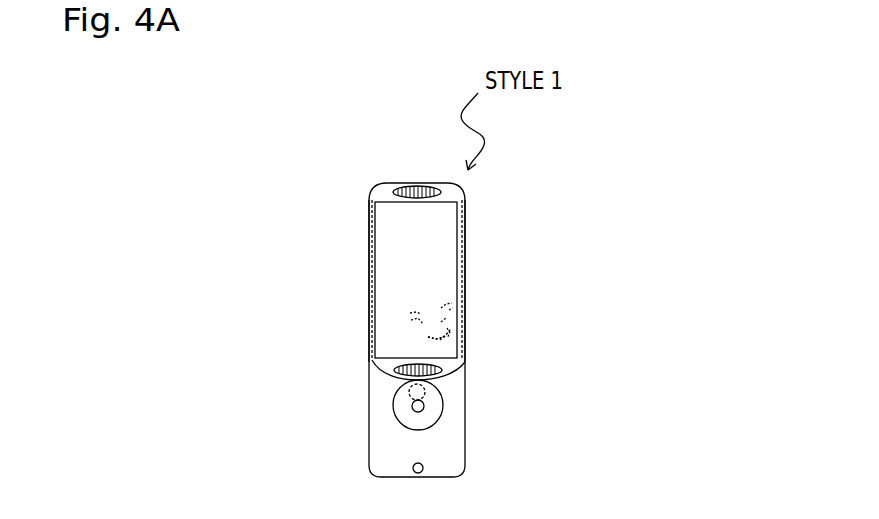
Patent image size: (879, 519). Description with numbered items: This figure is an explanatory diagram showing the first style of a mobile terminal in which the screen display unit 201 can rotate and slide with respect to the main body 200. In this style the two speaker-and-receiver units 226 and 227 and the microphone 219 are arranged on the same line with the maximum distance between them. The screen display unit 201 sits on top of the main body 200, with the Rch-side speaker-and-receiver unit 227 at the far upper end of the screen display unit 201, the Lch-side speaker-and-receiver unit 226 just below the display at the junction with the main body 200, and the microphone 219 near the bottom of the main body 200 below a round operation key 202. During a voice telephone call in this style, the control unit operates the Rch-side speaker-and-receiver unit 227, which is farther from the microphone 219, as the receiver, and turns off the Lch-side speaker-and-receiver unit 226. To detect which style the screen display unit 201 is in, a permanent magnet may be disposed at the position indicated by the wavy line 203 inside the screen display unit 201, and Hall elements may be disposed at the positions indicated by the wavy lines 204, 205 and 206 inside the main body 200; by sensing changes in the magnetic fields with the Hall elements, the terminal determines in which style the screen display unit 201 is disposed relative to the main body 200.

The main body 200 is at (465, 443).
The screen display unit 201 is at (465, 235).
The operation key 202 is at (443, 408).
The wavy line 203 is at (458, 338).
The wavy line 204 is at (439, 334).
The wavy line 205 is at (457, 304).
The wavy line 206 is at (428, 392).
The microphone 219 is at (423, 467).
The Lch-side speaker-and-receiver unit 226 is at (443, 369).
The Rch-side speaker-and-receiver unit 227 is at (400, 189).